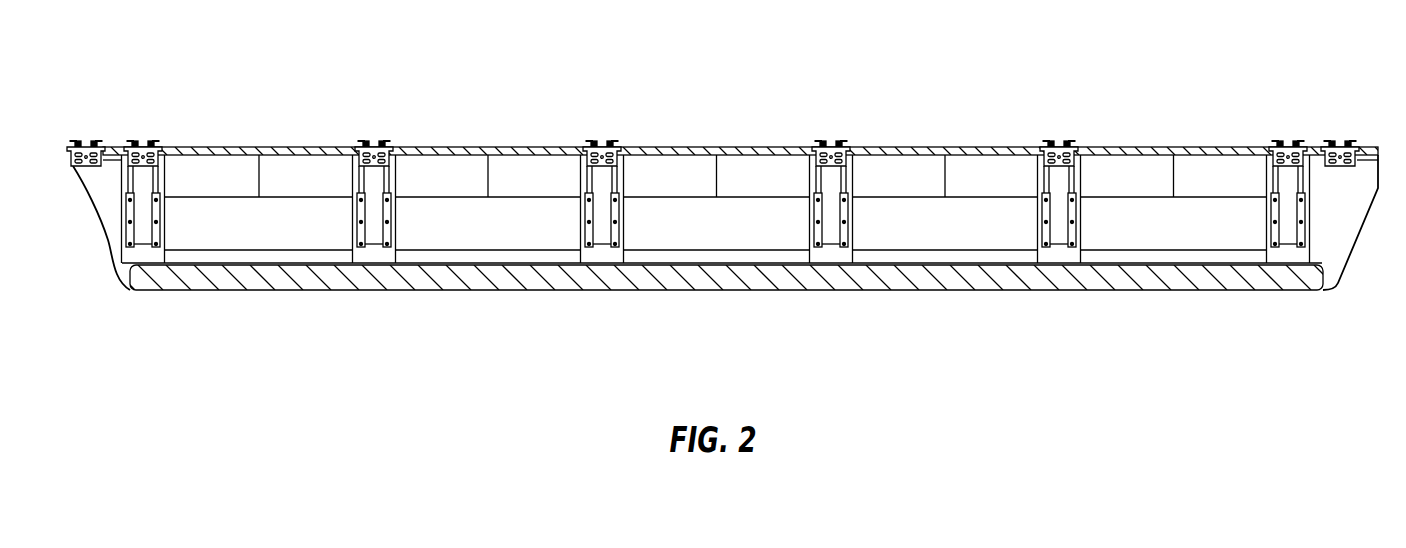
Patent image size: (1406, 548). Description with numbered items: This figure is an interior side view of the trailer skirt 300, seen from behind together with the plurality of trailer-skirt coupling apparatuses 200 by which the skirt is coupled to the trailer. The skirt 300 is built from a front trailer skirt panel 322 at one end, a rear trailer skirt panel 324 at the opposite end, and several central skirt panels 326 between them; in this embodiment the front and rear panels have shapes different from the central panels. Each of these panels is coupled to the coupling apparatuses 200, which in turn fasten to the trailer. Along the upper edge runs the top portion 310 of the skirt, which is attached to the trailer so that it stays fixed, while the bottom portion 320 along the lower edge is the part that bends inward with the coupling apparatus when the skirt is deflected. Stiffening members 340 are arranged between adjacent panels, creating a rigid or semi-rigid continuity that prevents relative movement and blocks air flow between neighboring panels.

The trailer-skirt coupling apparatus 200 is at (601, 104).
The trailer skirt 300 is at (1345, 104).
The top portion of the trailer skirt 310 is at (235, 147).
The bottom portion of the skirt 320 is at (258, 290).
The front trailer skirt panel 322 is at (1340, 245).
The rear trailer skirt panel 324 is at (110, 213).
The central skirt panel 326 is at (450, 172).
The stiffening member 340 is at (510, 230).